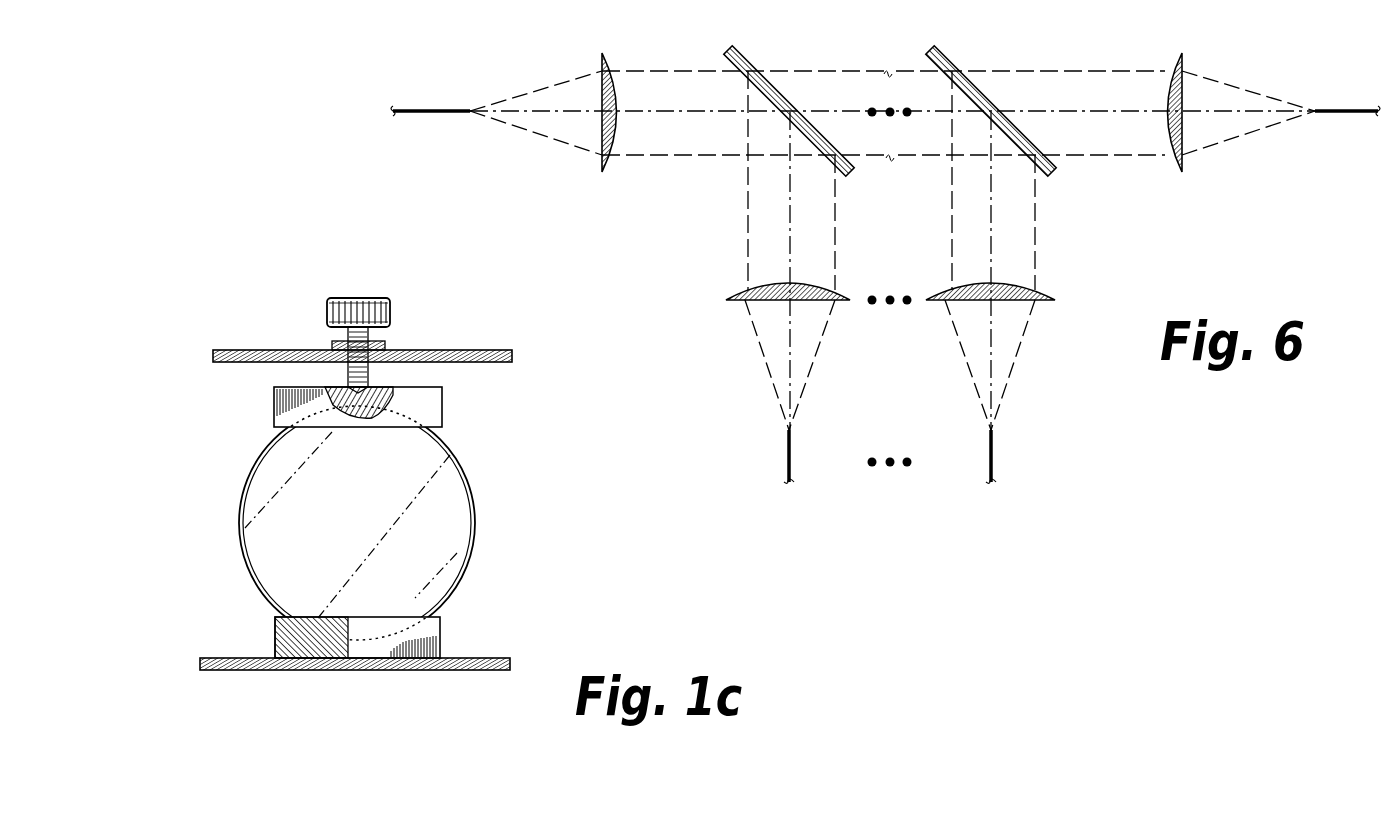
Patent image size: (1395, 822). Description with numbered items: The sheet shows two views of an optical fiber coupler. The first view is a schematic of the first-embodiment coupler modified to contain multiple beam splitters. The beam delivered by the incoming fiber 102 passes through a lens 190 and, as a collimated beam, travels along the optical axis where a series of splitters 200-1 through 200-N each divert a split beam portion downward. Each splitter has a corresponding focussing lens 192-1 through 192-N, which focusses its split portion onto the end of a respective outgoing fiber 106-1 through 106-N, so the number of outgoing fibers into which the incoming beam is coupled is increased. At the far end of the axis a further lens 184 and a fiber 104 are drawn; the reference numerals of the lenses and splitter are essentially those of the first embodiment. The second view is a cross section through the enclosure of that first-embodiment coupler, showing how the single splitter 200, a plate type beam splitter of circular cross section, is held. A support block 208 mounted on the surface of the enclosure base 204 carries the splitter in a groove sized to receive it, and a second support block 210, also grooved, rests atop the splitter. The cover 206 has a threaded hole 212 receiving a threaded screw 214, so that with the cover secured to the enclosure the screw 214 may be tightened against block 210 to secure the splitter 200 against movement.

In FIG. 6, the input optical fiber 102 is at (427, 110).
In FIG. 6, the collimating lens 190 is at (613, 93).
In FIG. 6, the beam splitter 200-1 is at (744, 62).
In FIG. 6, the beam splitter 200-N is at (949, 61).
In FIG. 6, the focusing lens 184 is at (1188, 73).
In FIG. 6, the output optical fiber 104 is at (1340, 112).
In FIG. 6, the focussing lens 192-1 is at (736, 294).
In FIG. 6, the focussing lens 192-N is at (1052, 293).
In FIG. 6, the outgoing fiber 106-1 is at (787, 466).
In FIG. 6, the outgoing fiber 106-N is at (994, 466).
In FIG. 1c, the threaded screw 214 is at (327, 305).
In FIG. 1c, the threaded hole 212 is at (365, 372).
In FIG. 1c, the cover 206 is at (262, 349).
In FIG. 1c, the support block 210 is at (274, 405).
In FIG. 1c, the beam splitter 200 is at (248, 483).
In FIG. 1c, the support block 208 is at (440, 640).
In FIG. 1c, the base 204 is at (226, 658).